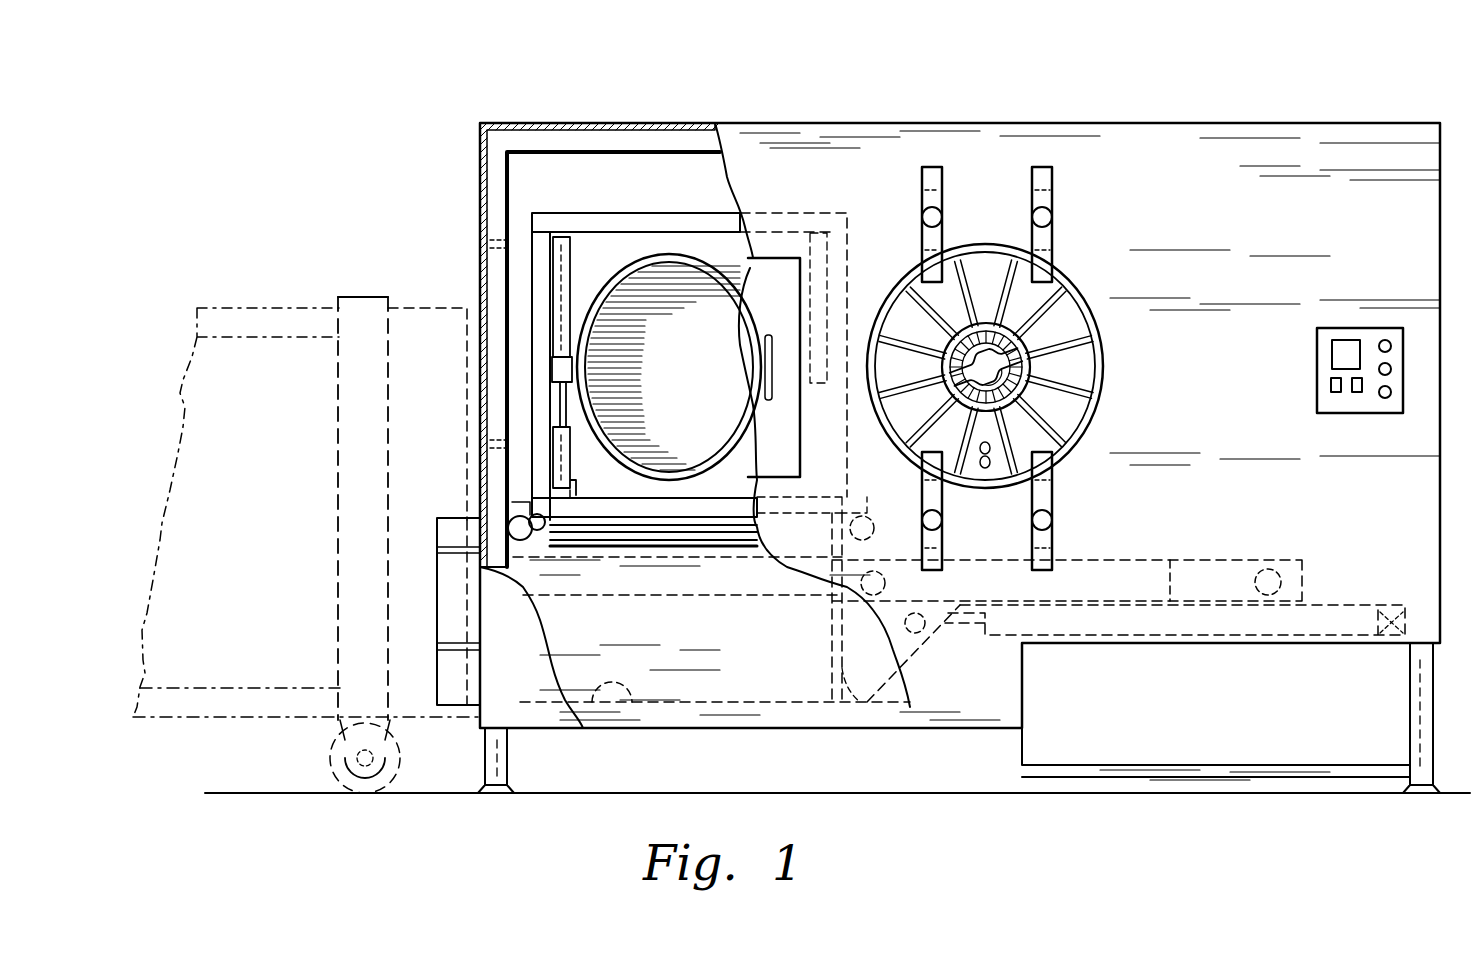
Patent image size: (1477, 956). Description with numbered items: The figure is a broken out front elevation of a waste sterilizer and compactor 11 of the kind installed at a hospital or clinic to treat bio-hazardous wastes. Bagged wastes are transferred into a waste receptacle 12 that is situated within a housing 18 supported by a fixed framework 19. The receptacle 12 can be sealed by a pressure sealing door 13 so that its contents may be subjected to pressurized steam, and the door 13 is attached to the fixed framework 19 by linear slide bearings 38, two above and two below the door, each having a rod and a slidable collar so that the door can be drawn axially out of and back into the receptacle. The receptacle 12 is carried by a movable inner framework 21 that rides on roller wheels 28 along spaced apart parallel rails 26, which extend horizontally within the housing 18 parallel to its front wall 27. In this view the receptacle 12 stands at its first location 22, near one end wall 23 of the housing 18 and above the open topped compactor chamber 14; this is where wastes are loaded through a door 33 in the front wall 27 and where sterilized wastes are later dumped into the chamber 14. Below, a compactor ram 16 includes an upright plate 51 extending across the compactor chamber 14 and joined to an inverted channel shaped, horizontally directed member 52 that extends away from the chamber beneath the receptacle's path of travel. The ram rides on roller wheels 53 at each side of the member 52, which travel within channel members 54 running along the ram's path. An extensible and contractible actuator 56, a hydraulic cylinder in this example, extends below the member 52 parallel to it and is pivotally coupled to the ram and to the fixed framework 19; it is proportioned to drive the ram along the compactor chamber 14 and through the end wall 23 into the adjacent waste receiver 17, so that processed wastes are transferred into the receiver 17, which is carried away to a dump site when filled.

The waste sterilizer and compactor 11 is at (375, 165).
The waste receptacle 12 is at (704, 346).
The pressure sealing door 13 is at (1065, 312).
The compactor chamber 14 is at (632, 702).
The compactor ram 16 is at (812, 653).
The waste receiver 17 is at (295, 308).
The housing 18 is at (1150, 122).
The fixed framework 19 is at (497, 253).
The movable inner framework 21 is at (592, 212).
The first location 22 is at (680, 240).
The end wall 23 is at (480, 382).
The rails 26 is at (700, 548).
The front wall 27 is at (1316, 244).
The roller wheels 28 is at (508, 522).
The door 33 is at (790, 258).
The linear slide bearings 38 is at (1062, 182).
The upright plate 51 is at (858, 702).
The horizontally directed member 52 is at (1172, 558).
The roller wheels 53 is at (1268, 568).
The channel members 54 is at (657, 580).
The actuator 56 is at (1137, 633).